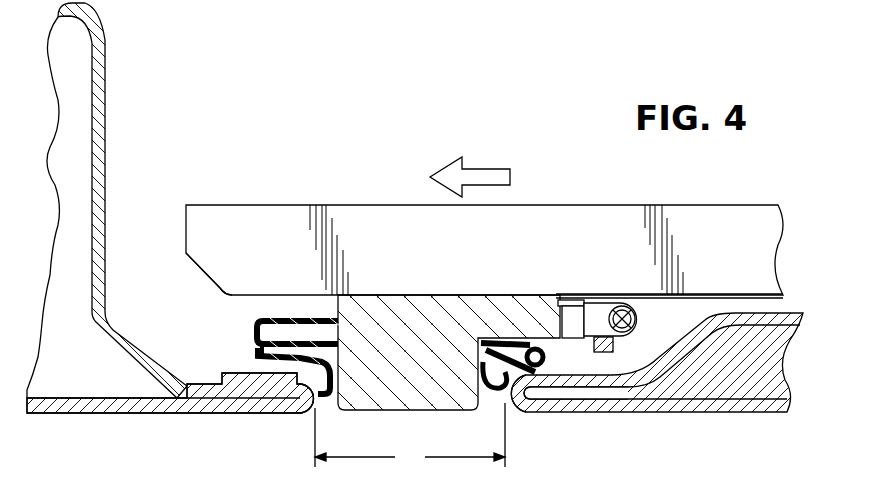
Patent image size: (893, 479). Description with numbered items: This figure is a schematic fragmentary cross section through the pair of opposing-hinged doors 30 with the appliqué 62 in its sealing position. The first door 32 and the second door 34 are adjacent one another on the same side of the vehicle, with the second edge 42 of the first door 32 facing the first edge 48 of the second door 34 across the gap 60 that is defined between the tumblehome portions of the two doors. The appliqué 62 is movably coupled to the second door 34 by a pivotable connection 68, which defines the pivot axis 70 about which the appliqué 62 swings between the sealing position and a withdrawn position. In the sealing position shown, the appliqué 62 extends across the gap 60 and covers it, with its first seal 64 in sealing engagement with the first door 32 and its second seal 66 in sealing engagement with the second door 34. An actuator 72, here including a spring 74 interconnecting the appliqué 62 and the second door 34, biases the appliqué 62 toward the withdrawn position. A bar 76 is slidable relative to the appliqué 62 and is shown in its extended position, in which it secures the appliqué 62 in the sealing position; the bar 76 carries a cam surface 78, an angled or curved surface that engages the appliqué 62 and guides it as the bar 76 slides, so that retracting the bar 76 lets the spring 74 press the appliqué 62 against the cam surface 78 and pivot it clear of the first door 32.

The pair of opposing-hinged doors 30 is at (503, 84).
The first door 32 is at (118, 413).
The second door 34 is at (710, 413).
The second edge 42 is at (318, 400).
The first edge 48 is at (506, 395).
The gap 60 is at (410, 435).
The appliqué 62 is at (393, 330).
The first seal 64 is at (255, 330).
The second seal 66 is at (540, 358).
The pivotable connection 68 is at (658, 316).
The pivot axis 70 is at (633, 298).
The actuator 72 is at (613, 296).
The spring 74 is at (637, 326).
The bar 76 is at (563, 204).
The cam surface 78 is at (203, 266).